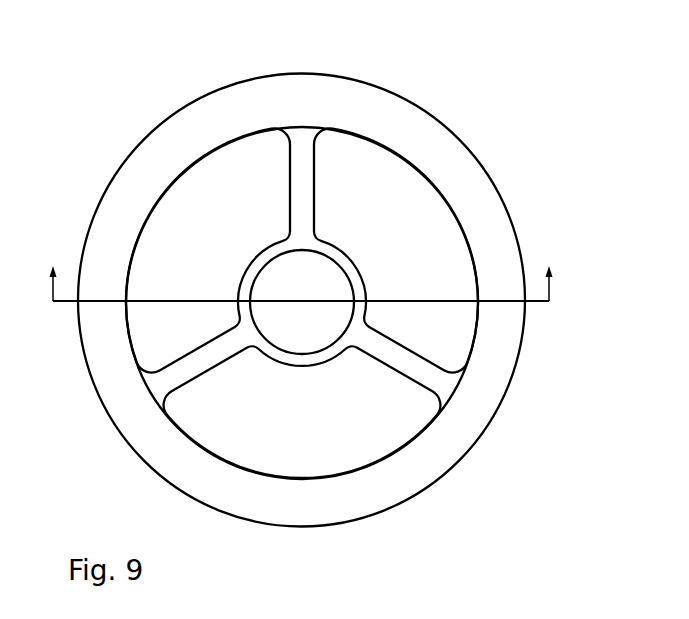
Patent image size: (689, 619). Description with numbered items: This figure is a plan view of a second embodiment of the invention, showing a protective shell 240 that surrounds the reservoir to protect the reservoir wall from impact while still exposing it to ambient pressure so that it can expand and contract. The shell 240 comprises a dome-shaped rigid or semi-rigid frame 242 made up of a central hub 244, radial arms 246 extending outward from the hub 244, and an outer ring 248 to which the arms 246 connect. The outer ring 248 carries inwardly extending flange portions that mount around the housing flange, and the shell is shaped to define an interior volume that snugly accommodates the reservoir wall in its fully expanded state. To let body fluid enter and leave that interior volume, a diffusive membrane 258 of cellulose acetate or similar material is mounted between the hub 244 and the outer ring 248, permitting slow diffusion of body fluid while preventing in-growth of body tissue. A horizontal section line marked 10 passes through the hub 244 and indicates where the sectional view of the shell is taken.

The protective shell 240 is at (306, 297).
The frame 242 is at (242, 81).
The hub 244 is at (358, 268).
The radial arms 246 is at (383, 367).
The outer ring 248 is at (485, 428).
The diffusive membrane 258 is at (338, 455).
The section line 10- 10 is at (302, 272).